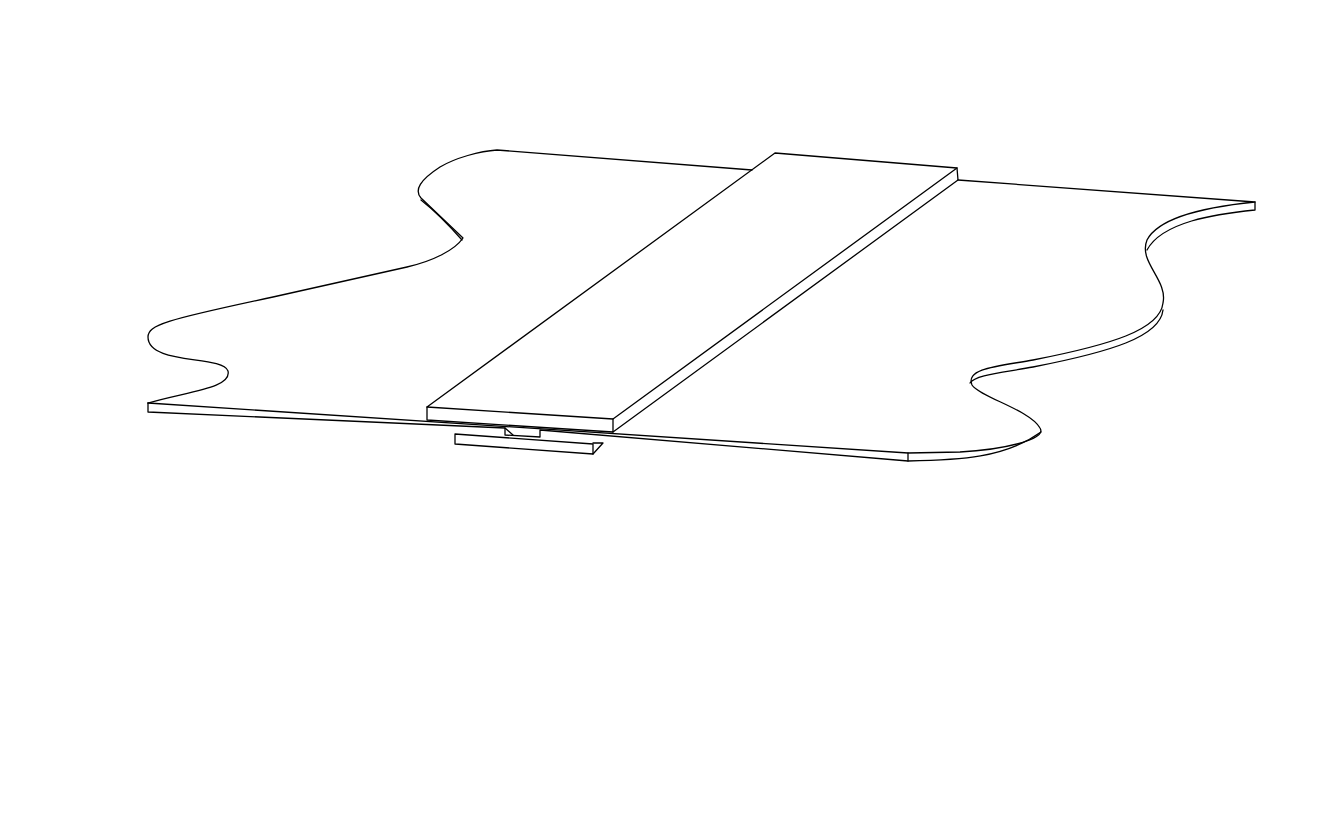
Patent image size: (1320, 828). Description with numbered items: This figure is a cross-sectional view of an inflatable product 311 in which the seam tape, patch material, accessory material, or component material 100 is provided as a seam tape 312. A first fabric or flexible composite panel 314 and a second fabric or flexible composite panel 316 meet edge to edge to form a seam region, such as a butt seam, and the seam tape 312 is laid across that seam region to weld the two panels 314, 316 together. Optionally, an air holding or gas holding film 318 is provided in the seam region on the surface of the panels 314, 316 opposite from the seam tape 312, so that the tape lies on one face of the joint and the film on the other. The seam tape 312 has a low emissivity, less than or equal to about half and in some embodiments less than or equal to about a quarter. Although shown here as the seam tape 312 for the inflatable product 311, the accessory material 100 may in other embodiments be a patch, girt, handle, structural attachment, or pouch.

The inflatable product 311 is at (245, 124).
The seam tape, patch material, accessory material, or component material 100 is at (815, 175).
The seam tape 312 is at (907, 175).
The first fabric or flexible composite panel 314 is at (473, 296).
The second fabric or flexible composite panel 316 is at (913, 337).
The air holding or gas holding film 318 is at (547, 443).